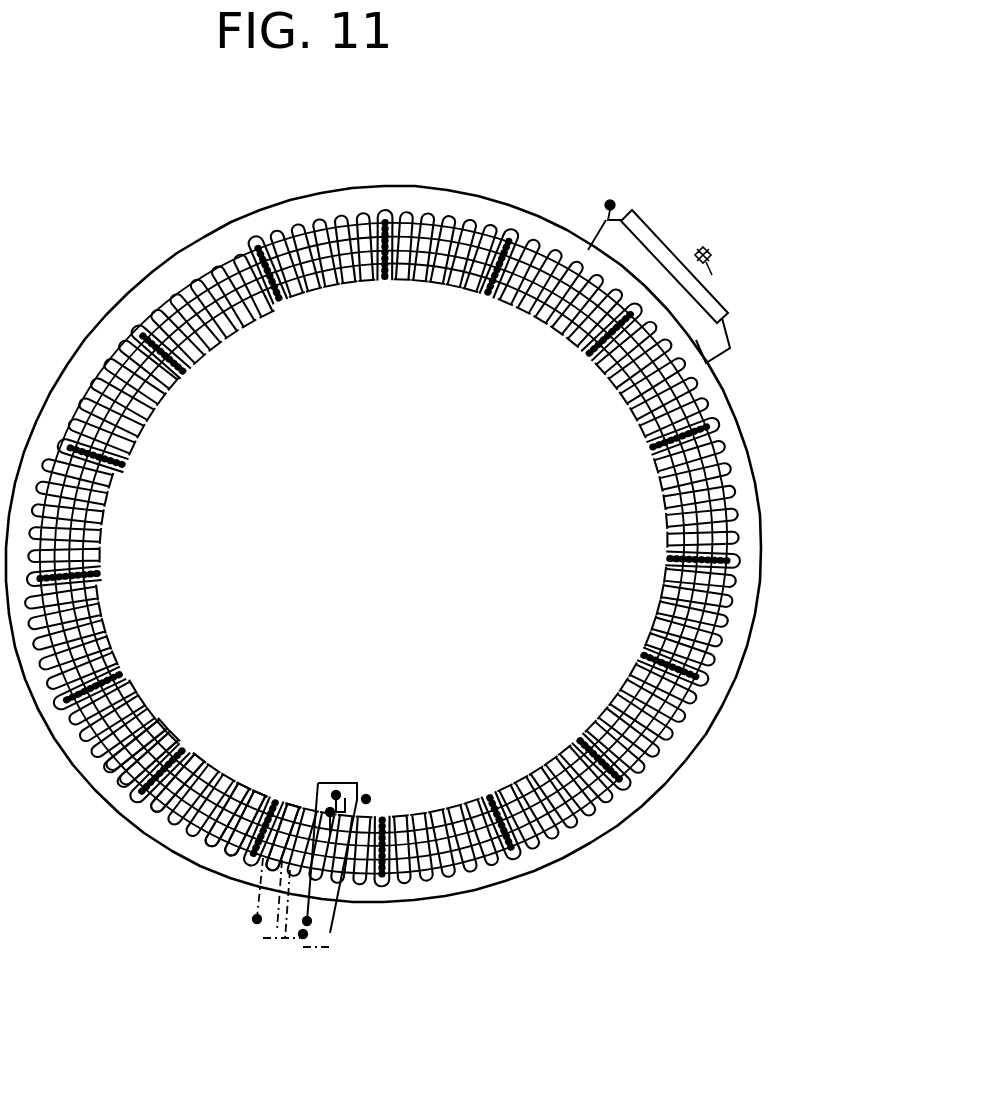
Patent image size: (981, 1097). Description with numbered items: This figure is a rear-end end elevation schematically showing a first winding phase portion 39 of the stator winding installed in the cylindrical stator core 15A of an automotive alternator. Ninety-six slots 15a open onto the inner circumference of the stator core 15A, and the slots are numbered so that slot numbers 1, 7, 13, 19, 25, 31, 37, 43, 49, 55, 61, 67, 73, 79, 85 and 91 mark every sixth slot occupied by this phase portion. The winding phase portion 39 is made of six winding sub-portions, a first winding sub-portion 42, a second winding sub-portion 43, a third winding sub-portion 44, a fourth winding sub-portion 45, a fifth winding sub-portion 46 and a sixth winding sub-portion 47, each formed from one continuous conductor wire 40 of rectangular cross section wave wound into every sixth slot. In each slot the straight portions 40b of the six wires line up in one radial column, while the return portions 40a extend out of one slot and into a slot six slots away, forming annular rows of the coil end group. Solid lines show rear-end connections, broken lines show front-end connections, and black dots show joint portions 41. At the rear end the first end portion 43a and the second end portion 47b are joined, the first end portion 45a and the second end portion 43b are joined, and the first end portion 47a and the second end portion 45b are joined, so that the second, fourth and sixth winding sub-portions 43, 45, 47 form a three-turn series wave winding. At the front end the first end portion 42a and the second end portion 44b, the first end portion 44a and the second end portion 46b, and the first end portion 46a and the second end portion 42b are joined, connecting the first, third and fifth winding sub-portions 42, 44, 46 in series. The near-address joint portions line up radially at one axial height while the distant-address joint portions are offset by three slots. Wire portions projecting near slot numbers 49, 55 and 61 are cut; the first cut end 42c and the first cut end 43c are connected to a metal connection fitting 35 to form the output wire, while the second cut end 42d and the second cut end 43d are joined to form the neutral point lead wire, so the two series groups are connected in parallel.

The stator core 15A is at (192, 247).
The slots 15a is at (176, 296).
The slot number 1 is at (267, 826).
The slot number 7 is at (163, 771).
The slot number 13 is at (102, 686).
The slot number 19 is at (78, 573).
The slot number 25 is at (105, 460).
The slot number 31 is at (173, 359).
The slot number 37 is at (274, 285).
The slot number 43 is at (170, 772).
The slot number 49 is at (498, 281).
The slot number 55 is at (604, 343).
The slot number 61 is at (673, 447).
The slot number 67 is at (690, 562).
The slot number 73 is at (665, 667).
The slot number 79 is at (597, 762).
The slot number 85 is at (498, 823).
The slot number 91 is at (388, 846).
The metal connection fitting 35 is at (720, 270).
The winding phase portion 39 is at (97, 513).
The continuous conductor wire 40 is at (90, 618).
The return portions 40a is at (104, 656).
The straight portions 40b is at (92, 567).
The joint portions 41 is at (340, 827).
The first winding sub-portion 42 is at (278, 804).
The third winding sub-portion 44 is at (253, 798).
The fourth winding sub-portion 45 is at (160, 748).
The fifth winding sub-portion 46 is at (238, 803).
The sixth winding sub-portion 47 is at (144, 738).
The first end portion of the first winding sub-portion 42a is at (430, 937).
The second end portion of the first winding sub-portion 42b is at (257, 920).
The first cut end of the first winding sub-portion 42c is at (774, 235).
The second cut end of the first winding sub-portion 42d is at (691, 201).
The first end portion of the second winding sub-portion 43a is at (457, 770).
The second end portion of the second winding sub-portion 43b is at (331, 812).
The first cut end of the second winding sub-portion 43c is at (710, 246).
The second cut end of the second winding sub-portion 43d is at (616, 202).
The first end portion of the third winding sub-portion 44a is at (428, 958).
The second end portion of the third winding sub-portion 44b is at (310, 921).
The first end portion of the fourth winding sub-portion 45a is at (434, 758).
The second end portion of the fourth winding sub-portion 45b is at (337, 795).
The first end portion of the fifth winding sub-portion 46a is at (211, 945).
The second end portion of the fifth winding sub-portion 46b is at (306, 936).
The first end portion of the sixth winding sub-portion 47a is at (437, 735).
The second end portion of the sixth winding sub-portion 47b is at (366, 799).